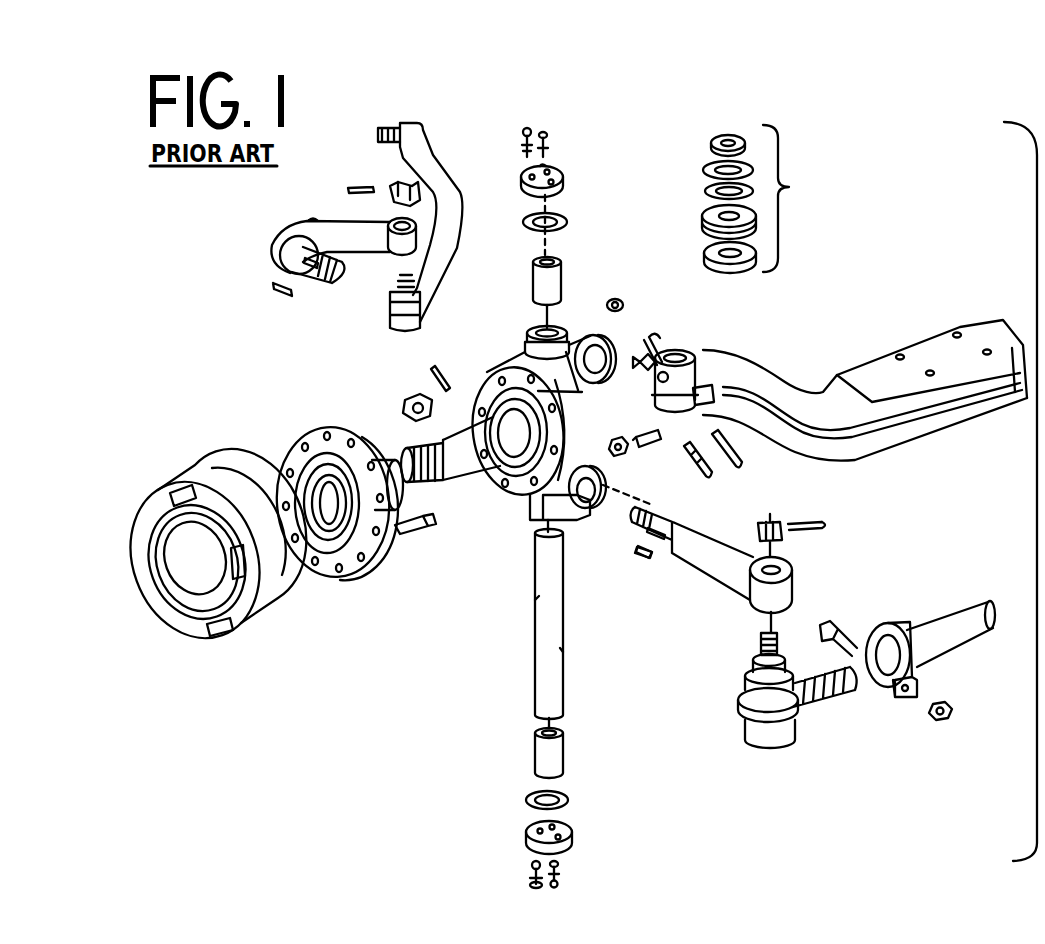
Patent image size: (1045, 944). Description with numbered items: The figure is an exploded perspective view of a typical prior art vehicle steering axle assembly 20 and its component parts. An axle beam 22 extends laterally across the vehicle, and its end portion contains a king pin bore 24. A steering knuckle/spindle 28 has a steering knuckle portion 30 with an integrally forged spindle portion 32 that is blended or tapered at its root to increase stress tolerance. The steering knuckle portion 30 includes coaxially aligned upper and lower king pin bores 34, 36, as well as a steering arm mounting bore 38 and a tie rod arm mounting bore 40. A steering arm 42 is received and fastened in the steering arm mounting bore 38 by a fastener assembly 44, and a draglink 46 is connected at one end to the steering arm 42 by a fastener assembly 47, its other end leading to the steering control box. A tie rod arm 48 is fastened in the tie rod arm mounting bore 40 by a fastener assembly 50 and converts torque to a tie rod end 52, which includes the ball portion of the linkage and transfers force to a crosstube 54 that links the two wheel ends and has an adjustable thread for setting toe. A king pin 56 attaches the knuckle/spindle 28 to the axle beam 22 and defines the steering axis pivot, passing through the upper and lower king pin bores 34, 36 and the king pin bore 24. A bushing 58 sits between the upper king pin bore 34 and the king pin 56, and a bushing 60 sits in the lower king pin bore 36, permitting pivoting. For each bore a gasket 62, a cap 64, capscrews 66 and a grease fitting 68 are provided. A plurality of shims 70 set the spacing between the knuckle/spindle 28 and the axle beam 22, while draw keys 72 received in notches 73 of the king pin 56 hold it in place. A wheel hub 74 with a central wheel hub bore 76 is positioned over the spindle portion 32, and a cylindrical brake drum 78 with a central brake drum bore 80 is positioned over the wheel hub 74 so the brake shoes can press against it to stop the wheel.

The vehicle steering axle assembly 20 is at (664, 146).
The axle beam 22 is at (883, 368).
The king pin bore 24 is at (690, 348).
The steering knuckle/spindle 28 is at (510, 318).
The steering knuckle portion 30 is at (555, 416).
The spindle portion 32 is at (468, 455).
The upper king pin bore 34 is at (560, 330).
The lower king pin bore 36 is at (563, 518).
The steering arm mounting bore 38 is at (606, 352).
The tie rod arm mounting bore 40 is at (595, 484).
The steering arm 42 is at (338, 225).
The fastener assembly 44 is at (656, 345).
The draglink 46 is at (440, 178).
The fastener assembly 47 is at (388, 185).
The tie rod arm 48 is at (700, 563).
The fastener assembly 50 is at (436, 368).
The tie rod end 52 is at (813, 706).
The crosstube 54 is at (937, 640).
The king pin 56 is at (548, 683).
The bushing 58 is at (563, 272).
The bushing 60 is at (565, 760).
The gasket 62 is at (568, 217).
The cap 64 is at (565, 175).
The capscrews 66 is at (525, 127).
The grease fitting 68 is at (546, 132).
The shims 70 is at (790, 188).
The draw keys 72 is at (700, 468).
The notches 73 is at (535, 600).
The wheel hub 74 is at (352, 563).
The wheel hub bore 76 is at (332, 492).
The brake drum 78 is at (257, 605).
The brake drum bore 80 is at (193, 563).